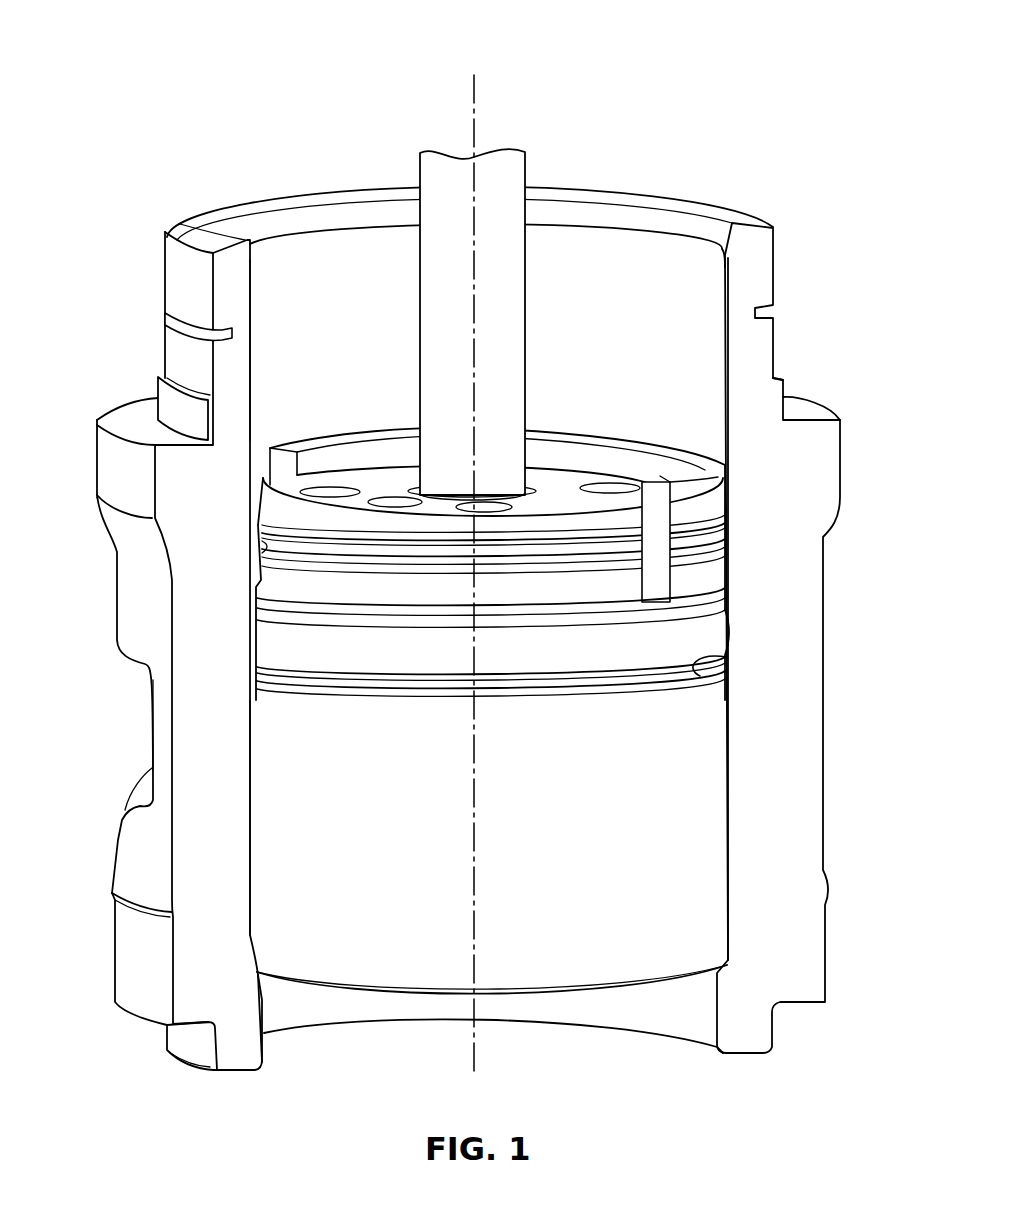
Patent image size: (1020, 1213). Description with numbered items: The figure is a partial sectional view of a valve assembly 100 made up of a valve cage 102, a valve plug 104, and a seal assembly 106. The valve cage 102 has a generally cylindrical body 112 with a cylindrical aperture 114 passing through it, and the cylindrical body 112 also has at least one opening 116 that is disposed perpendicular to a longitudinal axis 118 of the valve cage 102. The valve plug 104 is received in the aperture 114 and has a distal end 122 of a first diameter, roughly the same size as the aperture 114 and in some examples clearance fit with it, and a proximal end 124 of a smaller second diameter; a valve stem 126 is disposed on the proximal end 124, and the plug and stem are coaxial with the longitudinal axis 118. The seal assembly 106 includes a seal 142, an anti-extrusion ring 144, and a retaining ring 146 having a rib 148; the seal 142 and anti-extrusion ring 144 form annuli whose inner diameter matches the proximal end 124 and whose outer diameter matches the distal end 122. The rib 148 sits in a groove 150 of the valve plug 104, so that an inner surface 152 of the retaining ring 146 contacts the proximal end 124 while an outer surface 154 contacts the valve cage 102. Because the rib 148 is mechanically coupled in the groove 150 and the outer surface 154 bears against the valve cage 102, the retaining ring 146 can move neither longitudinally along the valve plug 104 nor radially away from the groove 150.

The valve assembly 100 is at (121, 97).
The valve cage 102 is at (112, 457).
The valve plug 104 is at (705, 730).
The seal assembly 106 is at (481, 521).
The cylindrical body 112 is at (180, 272).
The aperture 114 is at (321, 198).
The opening 116 is at (103, 731).
The longitudinal axis 118 is at (543, 567).
The distal end 122 is at (705, 795).
The proximal end 124 is at (676, 680).
The valve stem 126 is at (518, 173).
The seal 142 is at (707, 637).
The anti-extrusion ring 144 is at (263, 605).
The retaining ring 146 is at (707, 517).
The rib 148 is at (637, 548).
The groove 150 is at (262, 552).
The inner surface 152 is at (318, 462).
The outer surface 154 is at (707, 492).